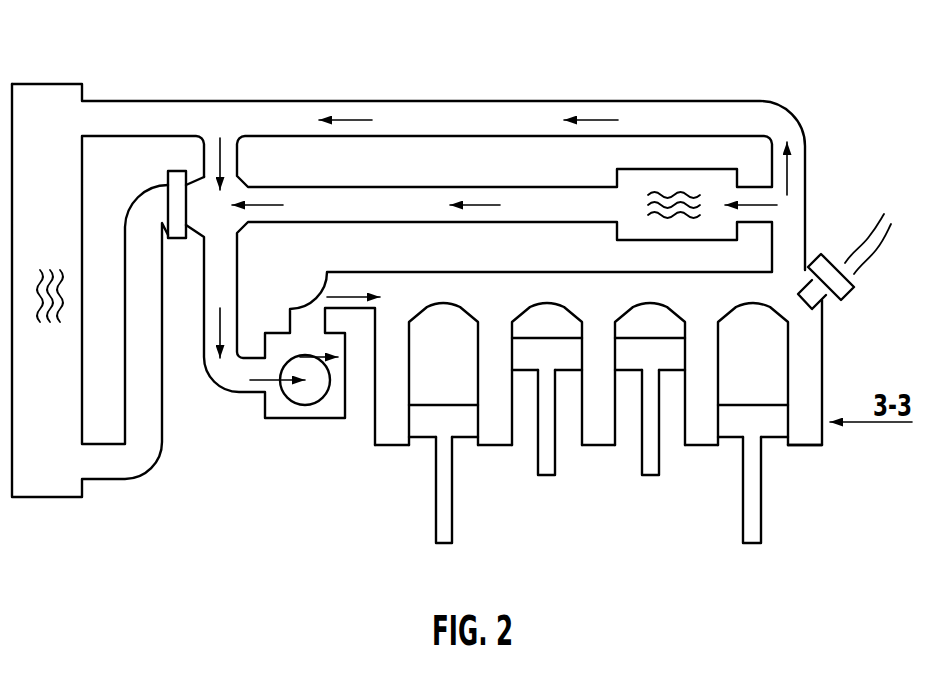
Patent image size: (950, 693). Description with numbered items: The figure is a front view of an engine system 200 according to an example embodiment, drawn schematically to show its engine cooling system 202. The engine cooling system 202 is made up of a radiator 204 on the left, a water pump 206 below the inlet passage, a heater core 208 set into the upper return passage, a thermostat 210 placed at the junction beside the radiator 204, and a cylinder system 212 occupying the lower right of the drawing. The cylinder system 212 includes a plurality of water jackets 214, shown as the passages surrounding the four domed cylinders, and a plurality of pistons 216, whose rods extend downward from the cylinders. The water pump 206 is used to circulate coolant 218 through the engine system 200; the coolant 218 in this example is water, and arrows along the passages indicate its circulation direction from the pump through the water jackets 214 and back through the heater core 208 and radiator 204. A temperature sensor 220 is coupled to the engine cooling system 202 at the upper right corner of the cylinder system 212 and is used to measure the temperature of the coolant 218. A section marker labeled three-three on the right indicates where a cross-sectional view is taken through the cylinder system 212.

The engine system 200 is at (356, 82).
The engine cooling system 202 is at (607, 84).
The radiator 204 is at (65, 481).
The water pump 206 is at (304, 408).
The heater core 208 is at (693, 169).
The thermostat 210 is at (168, 180).
The cylinder system 212 is at (367, 500).
The plurality of water jackets 214 is at (596, 448).
The plurality of pistons 216 is at (546, 478).
The coolant 218 is at (731, 119).
The temperature sensor 220 is at (854, 278).